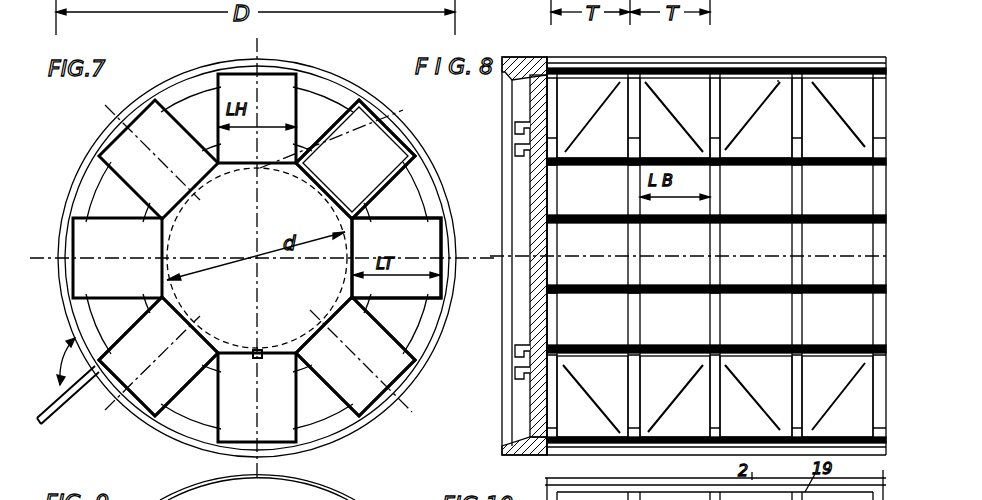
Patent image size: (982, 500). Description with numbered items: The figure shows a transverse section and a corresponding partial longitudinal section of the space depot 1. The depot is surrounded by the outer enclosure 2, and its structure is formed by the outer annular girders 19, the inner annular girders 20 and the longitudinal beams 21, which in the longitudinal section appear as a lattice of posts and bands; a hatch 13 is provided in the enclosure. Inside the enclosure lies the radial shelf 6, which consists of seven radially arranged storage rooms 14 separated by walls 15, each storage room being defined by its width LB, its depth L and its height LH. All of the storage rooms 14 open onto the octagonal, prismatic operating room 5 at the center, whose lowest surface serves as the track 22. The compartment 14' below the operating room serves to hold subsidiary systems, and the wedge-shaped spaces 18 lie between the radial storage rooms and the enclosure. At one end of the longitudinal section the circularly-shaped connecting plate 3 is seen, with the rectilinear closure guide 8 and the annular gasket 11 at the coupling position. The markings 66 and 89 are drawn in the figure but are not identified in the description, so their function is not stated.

In FIG. 7, the space depot 1 is at (148, 94).
In FIG. 7, the outer enclosure 2 is at (178, 74).
In FIG. 8, the outer enclosure 2 is at (742, 58).
In FIG. 8, the connecting plate 3 is at (523, 57).
In FIG. 7, the operating room 5 is at (246, 212).
In FIG. 8, the operating room 5 is at (686, 240).
In FIG. 7, the radial shelf 6 is at (300, 106).
In FIG. 7, the block inner liner 66 is at (383, 151).
In FIG. 8, the closure guide 8 is at (524, 128).
In FIG. 8, the annular gasket 11 is at (524, 152).
In FIG. 7, the hatch 13 is at (72, 398).
In FIG. 7, the storage room 14 is at (273, 262).
In FIG. 8, the storage room 14 is at (715, 257).
In FIG. 7, the compartment 14' is at (167, 387).
In FIG. 7, the wall 15 is at (437, 338).
In FIG. 8, the wall 15 is at (778, 80).
In FIG. 7, the wedge-shaped space 18 is at (325, 395).
In FIG. 7, the outer annular girder 19 is at (74, 213).
In FIG. 8, the outer annular girder 19 is at (797, 70).
In FIG. 7, the inner annular girder 20 is at (148, 206).
In FIG. 8, the inner annular girder 20 is at (633, 145).
In FIG. 8, the longitudinal beam 21 is at (860, 68).
In FIG. 7, the track 22 is at (282, 348).
In FIG. 8, the track 22 is at (683, 346).
In FIG. 7, the ring 89 is at (376, 491).